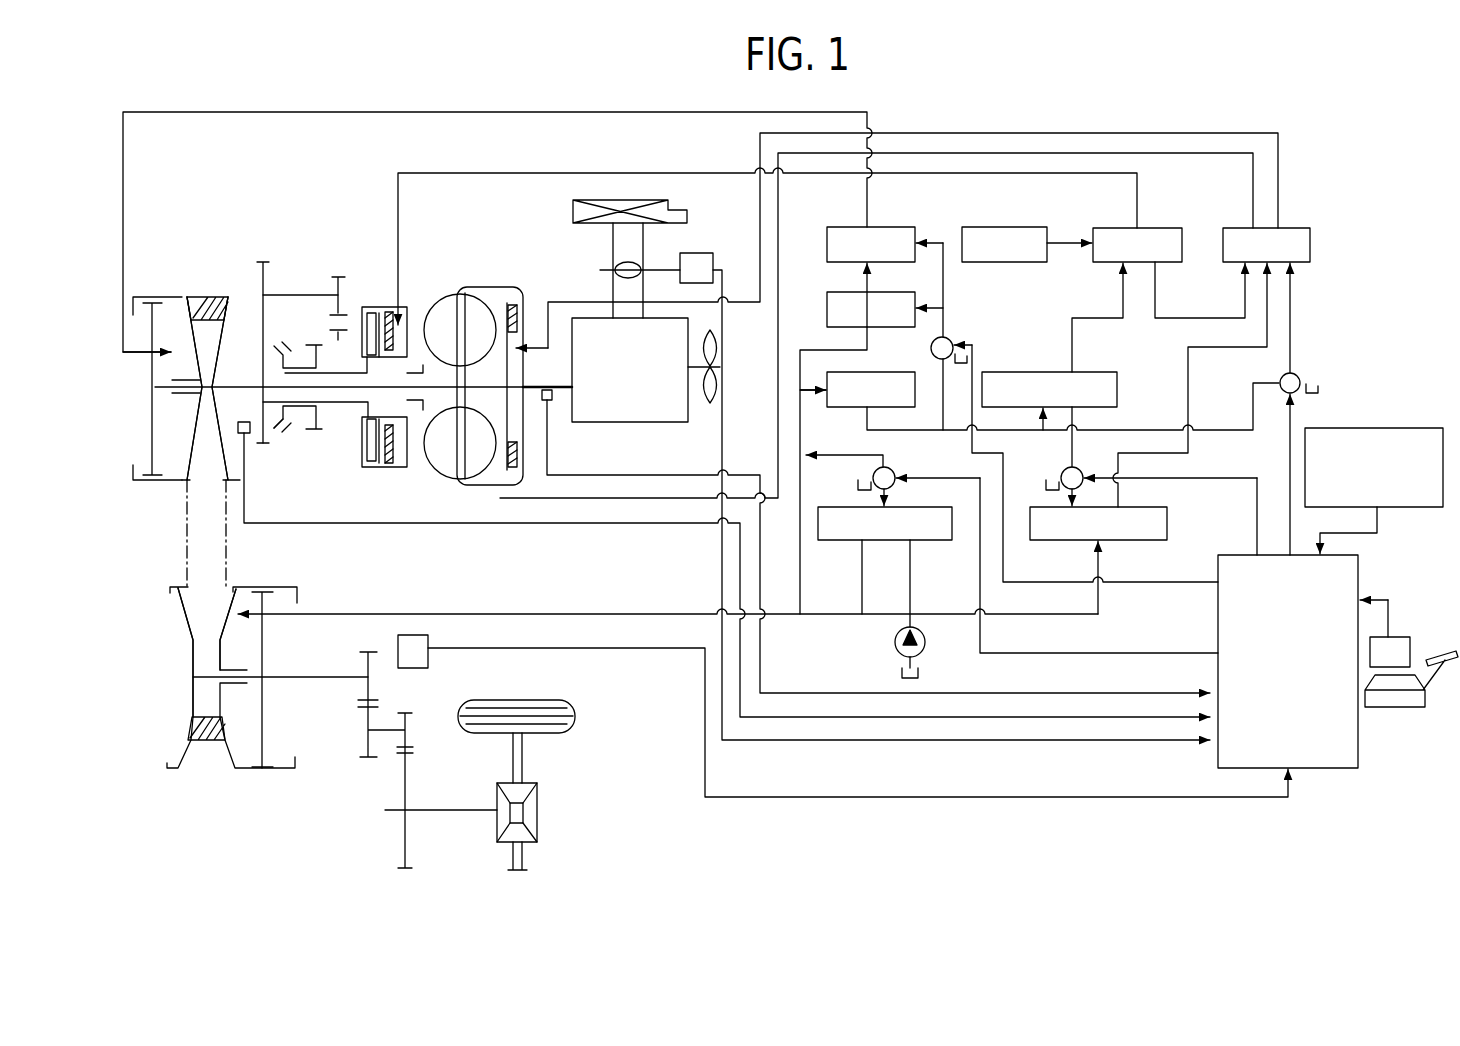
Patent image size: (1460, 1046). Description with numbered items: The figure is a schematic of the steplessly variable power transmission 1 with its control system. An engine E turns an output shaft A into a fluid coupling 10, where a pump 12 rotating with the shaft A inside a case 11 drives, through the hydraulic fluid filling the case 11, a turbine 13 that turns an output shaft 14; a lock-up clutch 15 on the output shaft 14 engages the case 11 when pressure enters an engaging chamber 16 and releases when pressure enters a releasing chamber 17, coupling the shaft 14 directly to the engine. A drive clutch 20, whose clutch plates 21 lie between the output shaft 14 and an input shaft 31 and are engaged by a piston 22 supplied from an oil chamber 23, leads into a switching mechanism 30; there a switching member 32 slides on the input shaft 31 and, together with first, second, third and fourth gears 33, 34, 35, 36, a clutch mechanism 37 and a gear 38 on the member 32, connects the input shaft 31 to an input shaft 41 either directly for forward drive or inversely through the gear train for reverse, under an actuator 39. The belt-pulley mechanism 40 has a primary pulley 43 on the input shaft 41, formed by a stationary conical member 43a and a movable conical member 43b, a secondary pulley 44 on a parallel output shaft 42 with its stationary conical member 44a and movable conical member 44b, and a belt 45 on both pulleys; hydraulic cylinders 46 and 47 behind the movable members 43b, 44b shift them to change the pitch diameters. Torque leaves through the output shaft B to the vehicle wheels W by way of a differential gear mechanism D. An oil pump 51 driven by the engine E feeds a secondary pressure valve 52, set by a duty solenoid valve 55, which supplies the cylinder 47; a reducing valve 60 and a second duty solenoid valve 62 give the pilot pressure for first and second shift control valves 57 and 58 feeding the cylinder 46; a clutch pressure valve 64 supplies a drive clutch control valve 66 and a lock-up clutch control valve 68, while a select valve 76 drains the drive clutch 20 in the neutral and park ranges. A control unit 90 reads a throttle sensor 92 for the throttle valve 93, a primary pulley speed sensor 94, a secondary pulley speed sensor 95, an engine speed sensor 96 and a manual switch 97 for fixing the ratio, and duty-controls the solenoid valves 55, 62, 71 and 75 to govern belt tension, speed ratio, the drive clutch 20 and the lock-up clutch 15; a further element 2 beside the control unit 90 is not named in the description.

The steplessly variable power transmission 1 is at (489, 264).
The accelerator pedal sensor 2 is at (1405, 637).
The fluid coupling 10 is at (531, 293).
The case 11 is at (513, 287).
The pump 12 is at (436, 300).
The turbine 13 is at (478, 293).
The output shaft 14 is at (435, 383).
The lock-up clutch 15 is at (518, 312).
The engaging chamber 16 is at (500, 464).
The releasing chamber 17 is at (518, 407).
The drive clutch 20 is at (388, 300).
The clutch plates 21 is at (362, 452).
The piston 22 is at (387, 462).
The oil chamber 23 is at (407, 455).
The switching mechanism 30 is at (345, 262).
The input shaft 31 is at (336, 403).
The switching member 32 is at (279, 441).
The first gear 33 is at (353, 307).
The second gear 34 is at (332, 275).
The third gear 35 is at (264, 262).
The fourth gear 36 is at (257, 448).
The clutch mechanism 37 is at (277, 447).
The gear 38 is at (313, 343).
The actuator 39 is at (1017, 227).
The belt-pulley mechanism 40 is at (226, 290).
The input shaft 41 is at (212, 400).
The output shaft 42 is at (337, 673).
The primary pulley 43 is at (183, 292).
The stationary conical member 43a is at (213, 352).
The movable conical member 43b is at (197, 354).
The secondary pulley 44 is at (172, 774).
The stationary conical member 44a is at (192, 658).
The movable conical member 44b is at (222, 647).
The belt 45 is at (205, 296).
The hydraulic cylinder 46 is at (156, 437).
The hydraulic cylinder 47 is at (247, 700).
The oil pump 51 is at (895, 642).
The secondary pressure valve 52 is at (827, 506).
The duty solenoid valve 55 is at (894, 470).
The first shift control valve 57 is at (827, 302).
The second shift control valve 58 is at (900, 227).
The reducing valve 60 is at (907, 372).
The second duty solenoid valve 62 is at (952, 338).
The clutch pressure valve 64 is at (1167, 517).
The drive clutch control valve 66 is at (1153, 228).
The lock-up clutch control valve 68 is at (1297, 228).
The third duty solenoid valve 71 is at (1062, 470).
The fourth duty solenoid valve 75 is at (1298, 375).
The select valve 76 is at (1102, 372).
The control unit 90 is at (1340, 769).
The throttle sensor 92 is at (714, 262).
The throttle valve 93 is at (633, 263).
The primary pulley speed sensor 94 is at (230, 440).
The secondary pulley speed sensor 95 is at (428, 665).
The engine speed sensor 96 is at (554, 401).
The manual switch 97 is at (1405, 427).
The output shaft A is at (534, 384).
The output shaft B is at (457, 808).
The differential D is at (537, 807).
The engine E is at (674, 423).
The vehicle wheels W is at (573, 700).